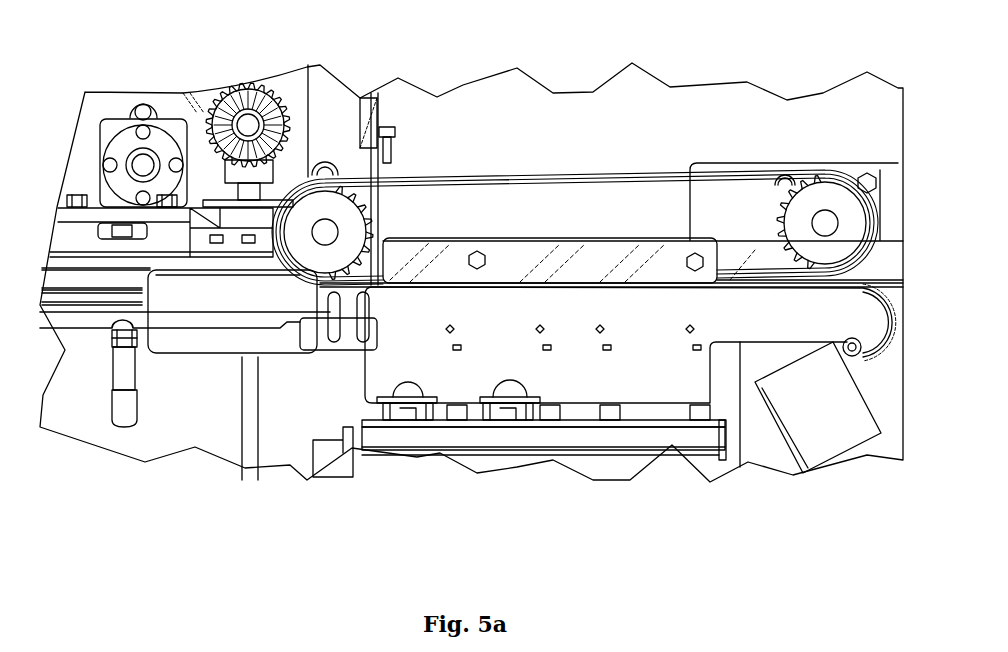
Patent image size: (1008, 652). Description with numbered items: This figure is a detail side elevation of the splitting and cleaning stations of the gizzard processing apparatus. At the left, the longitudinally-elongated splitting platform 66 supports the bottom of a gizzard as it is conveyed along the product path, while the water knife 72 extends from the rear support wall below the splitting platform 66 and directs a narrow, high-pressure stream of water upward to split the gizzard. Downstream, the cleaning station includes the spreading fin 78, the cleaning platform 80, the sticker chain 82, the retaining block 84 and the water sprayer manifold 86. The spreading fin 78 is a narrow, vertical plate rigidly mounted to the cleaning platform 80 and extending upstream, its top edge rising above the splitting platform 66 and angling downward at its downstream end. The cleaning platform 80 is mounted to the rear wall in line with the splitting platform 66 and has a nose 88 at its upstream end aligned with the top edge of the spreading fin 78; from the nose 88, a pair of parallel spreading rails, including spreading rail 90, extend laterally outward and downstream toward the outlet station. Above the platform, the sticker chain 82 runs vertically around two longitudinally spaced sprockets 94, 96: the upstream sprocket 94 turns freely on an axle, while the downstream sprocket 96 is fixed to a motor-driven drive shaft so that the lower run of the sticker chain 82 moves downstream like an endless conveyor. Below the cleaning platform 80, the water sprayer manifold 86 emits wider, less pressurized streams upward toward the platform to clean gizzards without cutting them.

The splitting platform 66 is at (237, 320).
The water knife 72 is at (123, 363).
The spreading fin 78 is at (210, 285).
The cleaning platform 80 is at (492, 343).
The sticker chain 82 is at (636, 177).
The retaining block 84 is at (521, 258).
The water sprayer manifold 86 is at (595, 440).
The nose 88 is at (352, 298).
The spreading rail 90 is at (390, 283).
The sprocket 94 is at (330, 212).
The sprocket 96 is at (822, 196).